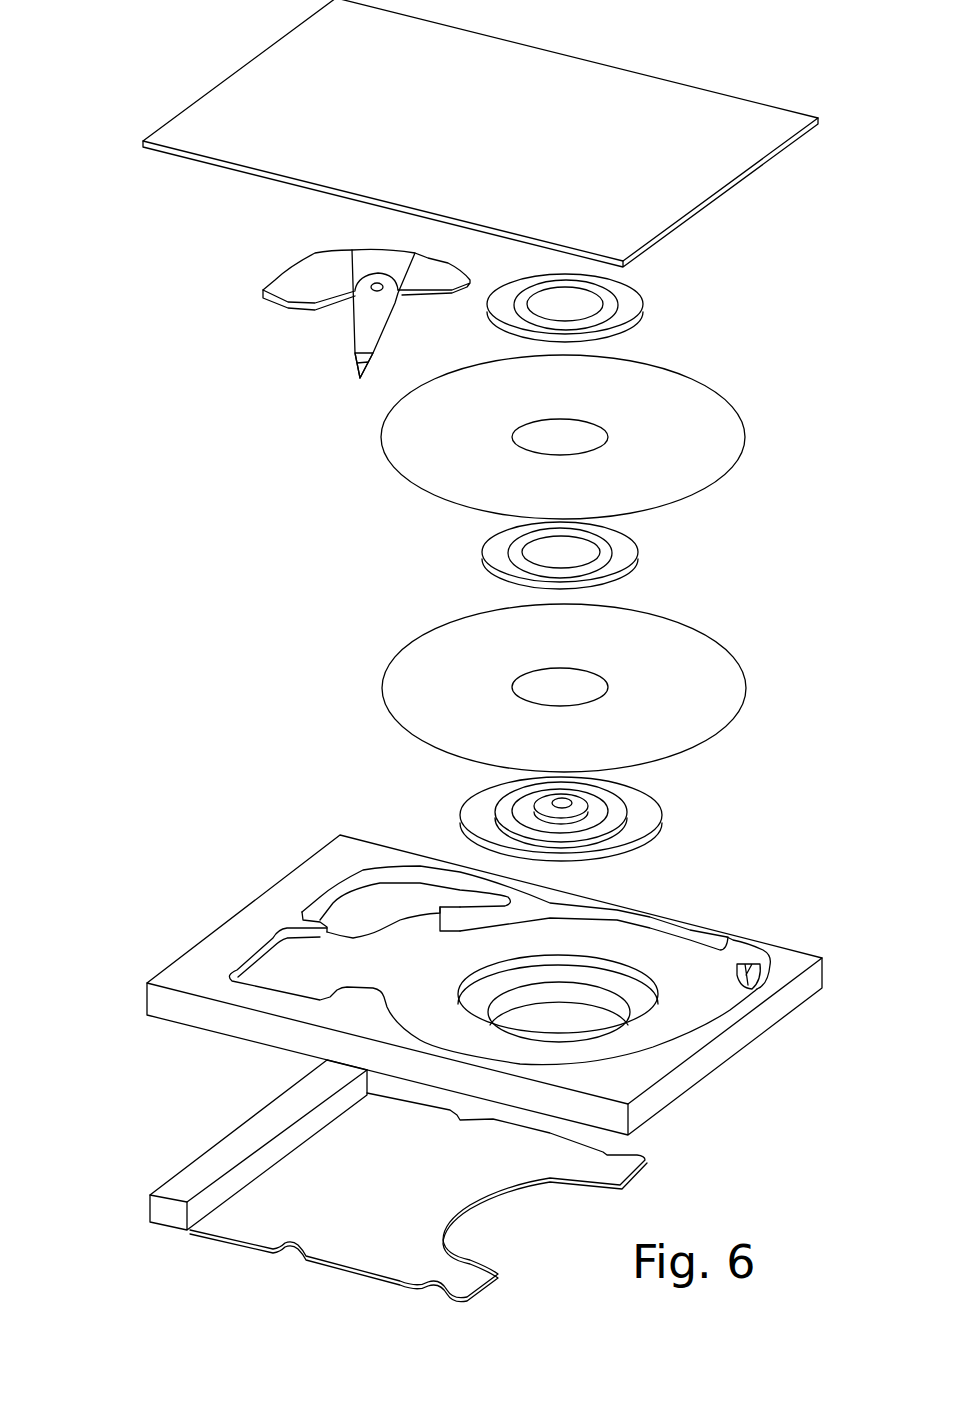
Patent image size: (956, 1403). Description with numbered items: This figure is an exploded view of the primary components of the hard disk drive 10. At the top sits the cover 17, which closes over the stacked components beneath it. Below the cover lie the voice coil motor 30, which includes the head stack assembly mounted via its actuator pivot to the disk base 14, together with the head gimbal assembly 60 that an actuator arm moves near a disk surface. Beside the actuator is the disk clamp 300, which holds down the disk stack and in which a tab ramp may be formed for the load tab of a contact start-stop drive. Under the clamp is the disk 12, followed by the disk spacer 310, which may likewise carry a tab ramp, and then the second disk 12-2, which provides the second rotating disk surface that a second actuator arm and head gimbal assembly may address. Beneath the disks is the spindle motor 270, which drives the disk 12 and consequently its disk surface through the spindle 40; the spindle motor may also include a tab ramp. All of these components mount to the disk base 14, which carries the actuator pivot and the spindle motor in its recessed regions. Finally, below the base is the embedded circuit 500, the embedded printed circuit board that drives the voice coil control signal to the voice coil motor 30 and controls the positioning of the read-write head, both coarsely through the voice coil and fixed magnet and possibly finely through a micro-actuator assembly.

The hard disk drive 10 is at (90, 25).
The cover 17 is at (732, 190).
The voice coil motor 30 is at (240, 250).
The head gimbal assembly 60 is at (355, 362).
The disk clamp 300 is at (705, 280).
The disk 12 is at (718, 477).
The disk spacer 310 is at (705, 528).
The second disk 12-2 is at (740, 707).
The spindle 40 is at (617, 801).
The spindle motor 270 is at (631, 823).
The disk base 14 is at (742, 1050).
The embedded circuit 500 is at (636, 1170).